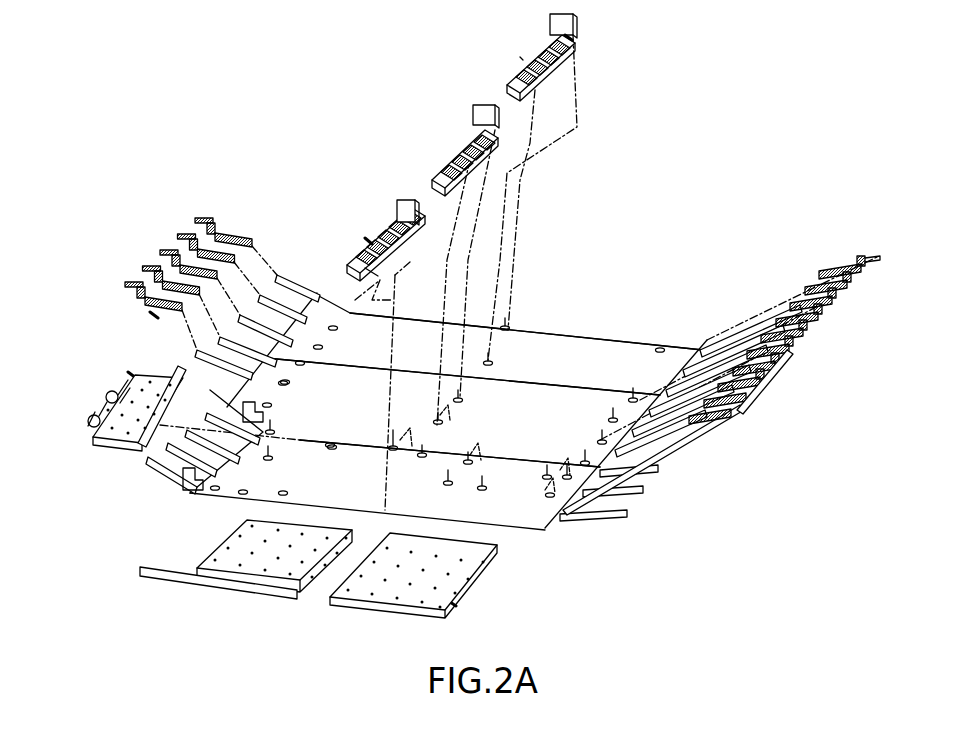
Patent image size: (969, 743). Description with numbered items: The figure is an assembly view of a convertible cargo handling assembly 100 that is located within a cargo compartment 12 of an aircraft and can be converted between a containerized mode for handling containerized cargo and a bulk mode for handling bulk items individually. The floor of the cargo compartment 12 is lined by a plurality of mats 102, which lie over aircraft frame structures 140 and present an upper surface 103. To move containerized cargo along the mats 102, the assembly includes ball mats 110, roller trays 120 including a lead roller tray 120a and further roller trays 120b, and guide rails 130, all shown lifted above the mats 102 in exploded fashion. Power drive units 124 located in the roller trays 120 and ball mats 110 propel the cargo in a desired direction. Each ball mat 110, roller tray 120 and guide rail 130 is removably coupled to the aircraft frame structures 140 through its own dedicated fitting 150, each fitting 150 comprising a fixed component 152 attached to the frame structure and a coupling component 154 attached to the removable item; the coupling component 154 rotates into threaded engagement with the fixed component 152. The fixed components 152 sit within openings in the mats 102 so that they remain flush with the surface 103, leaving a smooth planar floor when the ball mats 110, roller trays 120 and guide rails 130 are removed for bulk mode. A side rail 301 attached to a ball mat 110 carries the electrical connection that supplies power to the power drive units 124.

The cargo compartment 12 is at (177, 157).
The convertible cargo handling assembly 100 is at (301, 149).
The mat 102 is at (360, 387).
The surface 103 is at (566, 366).
The ball mat 110 is at (90, 447).
The roller tray 120 is at (462, 147).
The lead roller tray 120a is at (390, 218).
The roller tray 120b is at (507, 78).
The power drive unit 124 is at (520, 57).
The guide rail 130 is at (235, 232).
The aircraft frame structure 140 is at (278, 275).
The convertible cargo handling assembly fitting 150 is at (585, 566).
The fixed component 152 is at (290, 425).
The coupling component 154 is at (567, 37).
The side rail 301 is at (143, 569).